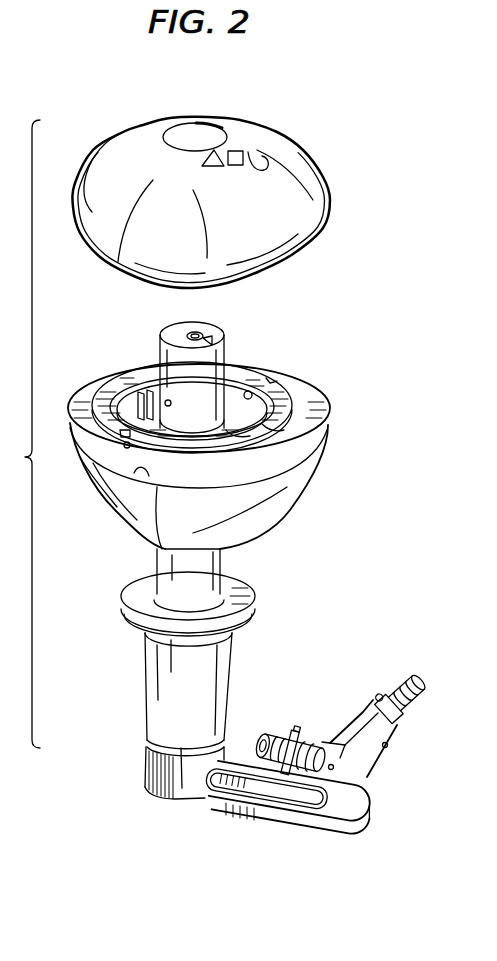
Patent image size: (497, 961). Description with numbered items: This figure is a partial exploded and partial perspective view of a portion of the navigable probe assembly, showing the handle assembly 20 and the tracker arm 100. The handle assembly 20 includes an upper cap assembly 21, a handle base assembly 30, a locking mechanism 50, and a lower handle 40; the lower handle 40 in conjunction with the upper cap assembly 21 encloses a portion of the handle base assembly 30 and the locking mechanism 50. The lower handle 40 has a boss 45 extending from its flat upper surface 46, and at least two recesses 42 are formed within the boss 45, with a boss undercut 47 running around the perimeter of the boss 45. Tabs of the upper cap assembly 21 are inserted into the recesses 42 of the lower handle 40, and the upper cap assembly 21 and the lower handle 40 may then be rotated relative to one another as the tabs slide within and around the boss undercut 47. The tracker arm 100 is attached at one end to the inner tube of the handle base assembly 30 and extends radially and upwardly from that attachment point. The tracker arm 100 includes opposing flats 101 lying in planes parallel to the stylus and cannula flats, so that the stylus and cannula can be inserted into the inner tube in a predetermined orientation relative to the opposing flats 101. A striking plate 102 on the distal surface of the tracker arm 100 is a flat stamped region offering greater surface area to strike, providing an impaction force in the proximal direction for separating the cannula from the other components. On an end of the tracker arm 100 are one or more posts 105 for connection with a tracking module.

The handle assembly 20 is at (21, 434).
The upper cap assembly 21 is at (318, 165).
The locking mechanism 50 is at (235, 323).
The recesses 42 is at (273, 382).
The boss 45 is at (103, 401).
The boss undercut 47 is at (284, 428).
The lower handle 40 is at (338, 438).
The flat upper surface 46 is at (127, 476).
The handle base assembly 30 is at (237, 565).
The opposing flats 101 is at (156, 775).
The striking plate 102 is at (255, 822).
The tracker arm 100 is at (232, 828).
The posts 105 is at (403, 700).